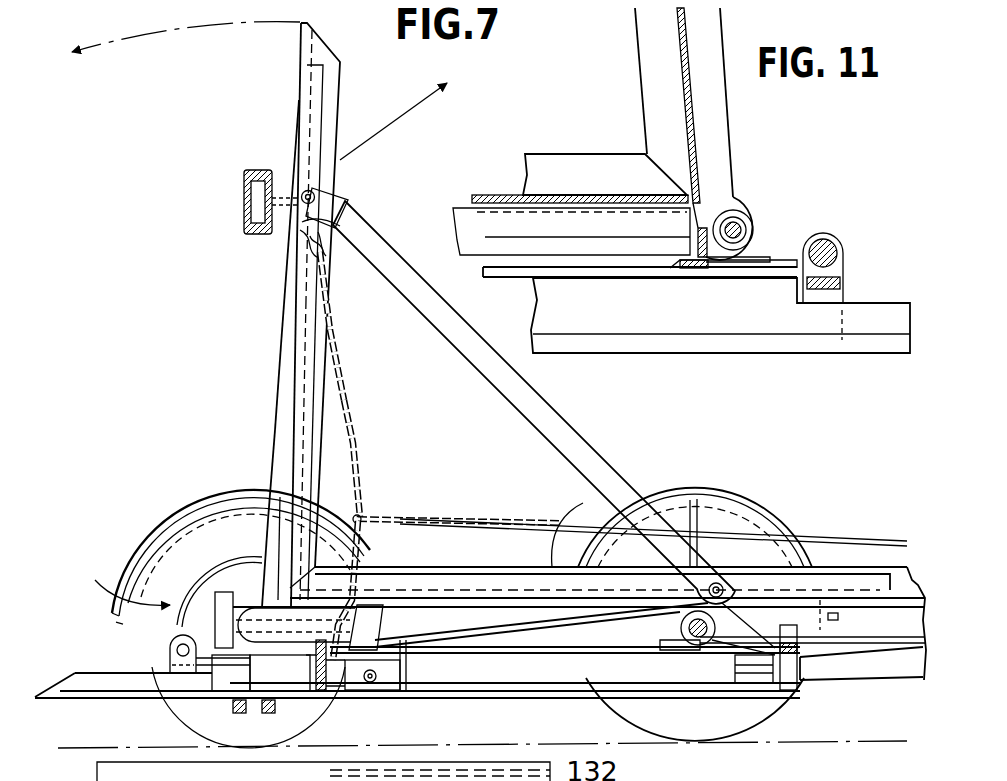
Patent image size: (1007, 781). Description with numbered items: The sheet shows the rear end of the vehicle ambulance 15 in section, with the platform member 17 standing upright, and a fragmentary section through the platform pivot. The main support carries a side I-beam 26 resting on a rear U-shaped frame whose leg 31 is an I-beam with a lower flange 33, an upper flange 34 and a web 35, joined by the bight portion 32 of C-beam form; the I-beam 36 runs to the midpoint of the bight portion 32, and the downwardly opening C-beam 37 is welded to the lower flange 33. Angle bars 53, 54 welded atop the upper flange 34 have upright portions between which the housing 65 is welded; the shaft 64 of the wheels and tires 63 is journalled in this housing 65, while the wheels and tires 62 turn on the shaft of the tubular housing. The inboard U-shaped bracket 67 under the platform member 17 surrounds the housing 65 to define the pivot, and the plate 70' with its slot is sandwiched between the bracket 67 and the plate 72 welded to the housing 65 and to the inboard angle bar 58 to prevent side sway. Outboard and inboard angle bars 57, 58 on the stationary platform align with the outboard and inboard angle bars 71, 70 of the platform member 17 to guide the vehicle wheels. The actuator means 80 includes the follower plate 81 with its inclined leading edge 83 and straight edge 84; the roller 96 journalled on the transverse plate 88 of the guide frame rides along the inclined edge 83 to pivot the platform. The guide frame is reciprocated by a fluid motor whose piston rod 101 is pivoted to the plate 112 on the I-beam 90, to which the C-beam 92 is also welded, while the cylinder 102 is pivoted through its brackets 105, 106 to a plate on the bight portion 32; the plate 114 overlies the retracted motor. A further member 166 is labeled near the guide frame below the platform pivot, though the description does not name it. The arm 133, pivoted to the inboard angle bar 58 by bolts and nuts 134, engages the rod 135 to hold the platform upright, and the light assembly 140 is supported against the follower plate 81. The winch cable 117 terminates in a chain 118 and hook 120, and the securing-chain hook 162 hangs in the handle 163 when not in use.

In FIG. 7, the vehicle ambulance 15 is at (640, 448).
In FIG. 7, the platform member 17 is at (349, 99).
In FIG. 7, the side I-beam 26 is at (813, 623).
In FIG. 7, the leg 31 is at (173, 702).
In FIG. 11, the leg 31 is at (828, 320).
In FIG. 7, the bight portion 32 is at (792, 688).
In FIG. 7, the lower flange 33 is at (112, 698).
In FIG. 11, the lower flange 33 is at (733, 356).
In FIG. 7, the upper flange 34 is at (246, 708).
In FIG. 11, the upper flange 34 is at (738, 275).
In FIG. 7, the web 35 is at (76, 680).
In FIG. 11, the web 35 is at (668, 326).
In FIG. 7, the I-beam 36 is at (858, 672).
In FIG. 7, the downwardly opening C-beam 37 is at (270, 708).
In FIG. 11, the angle bar 53 is at (660, 270).
In FIG. 11, the angle bar 54 is at (776, 255).
In FIG. 7, the outboard angle bar 57 is at (570, 535).
In FIG. 7, the inboard angle bar 58 is at (492, 598).
In FIG. 7, the wheels and tires 62 is at (673, 730).
In FIG. 7, the wheels and tires 63 is at (182, 542).
In FIG. 11, the shaft 64 is at (757, 232).
In FIG. 11, the housing 65 is at (752, 220).
In FIG. 11, the inboard U-shaped bracket 67 is at (740, 196).
In FIG. 7, the inboard angle bar 70 is at (346, 453).
In FIG. 7, the plate 70' is at (234, 516).
In FIG. 7, the outboard angle bar 71 is at (338, 370).
In FIG. 7, the plate 72 is at (376, 600).
In FIG. 7, the actuator means 80 is at (126, 576).
In FIG. 7, the follower plate 81 is at (270, 302).
In FIG. 7, the inclined leading edge 83 is at (266, 420).
In FIG. 7, the straight edge 84 is at (268, 348).
In FIG. 7, the transverse plate 88 is at (170, 662).
In FIG. 7, the I-beam 90 is at (325, 692).
In FIG. 7, the C-beam 92 is at (220, 688).
In FIG. 7, the roller 96 is at (178, 640).
In FIG. 11, the roller 96 is at (848, 256).
In FIG. 7, the piston rod 101 is at (346, 418).
In FIG. 7, the cylinder 102 is at (568, 672).
In FIG. 7, the bracket 105 is at (700, 652).
In FIG. 7, the bracket 106 is at (745, 690).
In FIG. 7, the plate 112 is at (372, 692).
In FIG. 7, the plate 114 is at (510, 680).
In FIG. 7, the cable 117 is at (852, 530).
In FIG. 7, the chain 118 is at (400, 518).
In FIG. 7, the hook 120 is at (472, 518).
In FIG. 7, the arm 133 is at (464, 352).
In FIG. 7, the bolts and nuts 134 is at (724, 586).
In FIG. 7, the rod 135 is at (318, 192).
In FIG. 7, the light assembly 140 is at (250, 230).
In FIG. 7, the hook 162 is at (328, 258).
In FIG. 7, the handle 163 is at (330, 222).
In FIG. 7, the block 166 is at (280, 673).